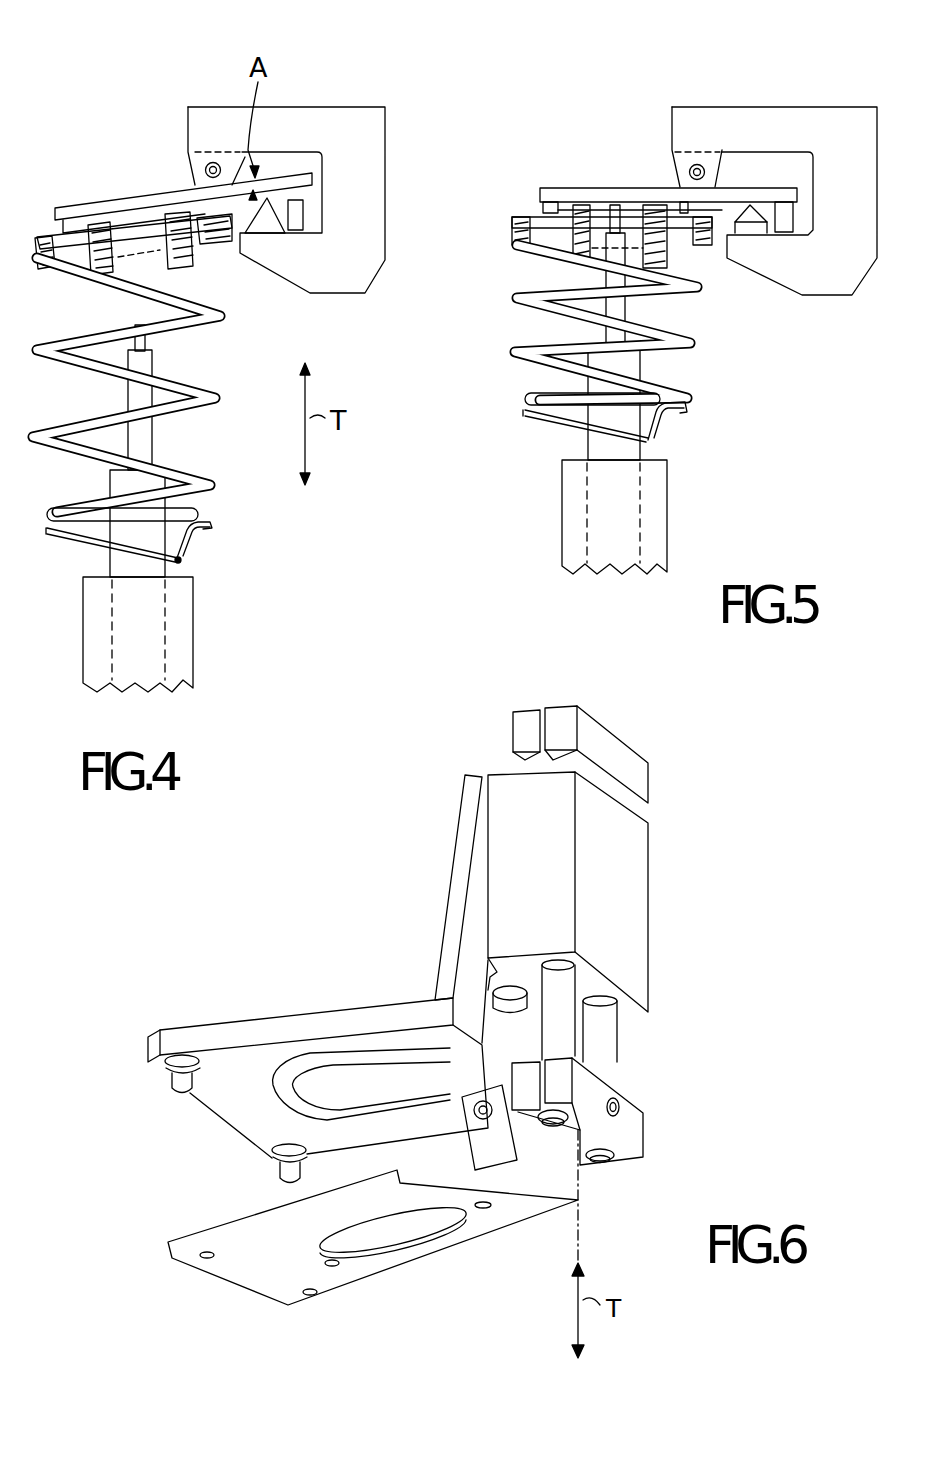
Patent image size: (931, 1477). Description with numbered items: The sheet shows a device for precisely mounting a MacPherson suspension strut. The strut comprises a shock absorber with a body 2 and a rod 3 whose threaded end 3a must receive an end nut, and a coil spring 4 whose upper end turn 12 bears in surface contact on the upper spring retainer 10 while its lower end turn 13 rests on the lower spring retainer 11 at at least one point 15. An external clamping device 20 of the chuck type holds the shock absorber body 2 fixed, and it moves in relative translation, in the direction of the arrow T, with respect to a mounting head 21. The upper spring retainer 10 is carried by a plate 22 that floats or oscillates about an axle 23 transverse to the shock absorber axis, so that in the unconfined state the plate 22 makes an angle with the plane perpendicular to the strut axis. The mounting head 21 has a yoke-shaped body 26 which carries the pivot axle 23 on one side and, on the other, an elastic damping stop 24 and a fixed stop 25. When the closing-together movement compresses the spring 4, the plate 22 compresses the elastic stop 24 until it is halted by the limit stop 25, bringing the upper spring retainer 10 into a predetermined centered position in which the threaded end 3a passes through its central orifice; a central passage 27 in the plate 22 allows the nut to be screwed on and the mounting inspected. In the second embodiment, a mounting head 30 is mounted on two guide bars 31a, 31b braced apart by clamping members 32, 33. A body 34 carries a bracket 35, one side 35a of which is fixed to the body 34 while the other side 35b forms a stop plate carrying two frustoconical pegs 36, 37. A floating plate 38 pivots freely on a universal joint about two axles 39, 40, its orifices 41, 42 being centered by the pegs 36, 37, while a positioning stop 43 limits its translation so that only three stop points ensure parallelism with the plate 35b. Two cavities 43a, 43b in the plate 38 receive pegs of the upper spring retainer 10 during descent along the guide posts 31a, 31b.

In FIG. 4, the shock absorber body 2 is at (125, 568).
In FIG. 5, the shock absorber body 2 is at (600, 451).
In FIG. 4, the shock absorber rod 3 is at (140, 439).
In FIG. 5, the shock absorber rod 3 is at (610, 296).
In FIG. 4, the threaded end of the shock absorber rod 3a is at (150, 341).
In FIG. 5, the threaded end of the shock absorber rod 3a is at (612, 212).
In FIG. 4, the coil spring 4 is at (213, 403).
In FIG. 5, the coil spring 4 is at (687, 346).
In FIG. 4, the upper spring retainer 10 is at (150, 225).
In FIG. 5, the upper spring retainer 10 is at (524, 223).
In FIG. 4, the lower spring retainer 11 is at (212, 528).
In FIG. 5, the lower spring retainer 11 is at (684, 413).
In FIG. 4, the upper end turn 12 is at (190, 262).
In FIG. 5, the upper end turn 12 is at (677, 244).
In FIG. 4, the lower end turn 13 is at (181, 551).
In FIG. 5, the lower end turn 13 is at (651, 444).
In FIG. 4, the point 15 is at (184, 565).
In FIG. 4, the external clamping device 20 is at (187, 640).
In FIG. 5, the external clamping device 20 is at (577, 539).
In FIG. 4, the mounting head 21 is at (305, 92).
In FIG. 5, the mounting head 21 is at (815, 97).
In FIG. 4, the plate 22 is at (68, 212).
In FIG. 5, the plate 22 is at (754, 190).
In FIG. 4, the axle 23 is at (200, 165).
In FIG. 5, the axle 23 is at (688, 169).
In FIG. 4, the elastic damping stop 24 is at (266, 222).
In FIG. 5, the elastic damping stop 24 is at (749, 218).
In FIG. 4, the fixed stop 25 is at (296, 214).
In FIG. 5, the fixed stop 25 is at (785, 233).
In FIG. 4, the body 26 is at (360, 128).
In FIG. 5, the body 26 is at (858, 133).
In FIG. 4, the central passage 27 is at (110, 200).
In FIG. 5, the central passage 27 is at (585, 185).
In FIG. 6, the mounting head 30 is at (449, 793).
In FIG. 6, the guide bar 31a is at (562, 990).
In FIG. 6, the guide bar 31b is at (604, 1016).
In FIG. 6, the clamping member 32 is at (636, 1130).
In FIG. 6, the clamping member 33 is at (624, 765).
In FIG. 6, the body 34 is at (620, 858).
In FIG. 6, the bracket 35 is at (378, 1000).
In FIG. 6, the side of the bracket 35a is at (456, 892).
In FIG. 6, the plate 35b is at (233, 1028).
In FIG. 6, the frustoconical peg 36 is at (175, 1095).
In FIG. 6, the frustoconical peg 37 is at (280, 1182).
In FIG. 6, the floating plate 38 is at (253, 1267).
In FIG. 6, the axle 39 is at (618, 1104).
In FIG. 6, the axle 40 is at (503, 1167).
In FIG. 6, the orifice 41 is at (205, 1260).
In FIG. 6, the orifice 42 is at (310, 1297).
In FIG. 6, the positioning stop 43 is at (492, 988).
In FIG. 6, the cavity 43a is at (486, 1209).
In FIG. 6, the cavity 43b is at (333, 1267).